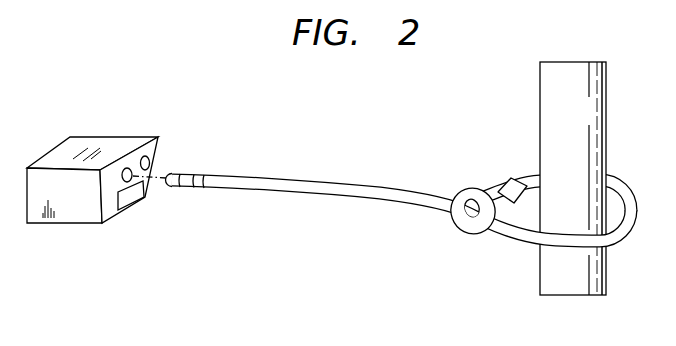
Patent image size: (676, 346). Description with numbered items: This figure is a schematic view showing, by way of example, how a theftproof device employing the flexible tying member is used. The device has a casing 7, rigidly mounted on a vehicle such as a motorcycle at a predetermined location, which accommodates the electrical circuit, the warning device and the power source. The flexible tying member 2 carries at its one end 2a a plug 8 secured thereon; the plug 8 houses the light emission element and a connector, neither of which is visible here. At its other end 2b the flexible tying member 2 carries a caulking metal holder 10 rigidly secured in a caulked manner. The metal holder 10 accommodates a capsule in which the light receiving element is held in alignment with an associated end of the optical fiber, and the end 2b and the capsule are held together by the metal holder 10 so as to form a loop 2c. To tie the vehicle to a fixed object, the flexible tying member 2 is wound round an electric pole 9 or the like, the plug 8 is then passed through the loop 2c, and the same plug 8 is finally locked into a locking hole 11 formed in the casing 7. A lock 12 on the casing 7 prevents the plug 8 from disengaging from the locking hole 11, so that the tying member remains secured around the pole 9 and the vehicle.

The flexible tying member 2 is at (310, 198).
The one end of the flexible tying member 2a is at (212, 177).
The other end of the flexible tying member 2b is at (497, 228).
The loop 2c is at (480, 190).
The casing 7 is at (70, 214).
The plug 8 is at (173, 188).
The electric pole 9 is at (602, 117).
The caulking metal holder 10 is at (510, 180).
The locking hole 11 is at (128, 168).
The lock 12 is at (153, 163).